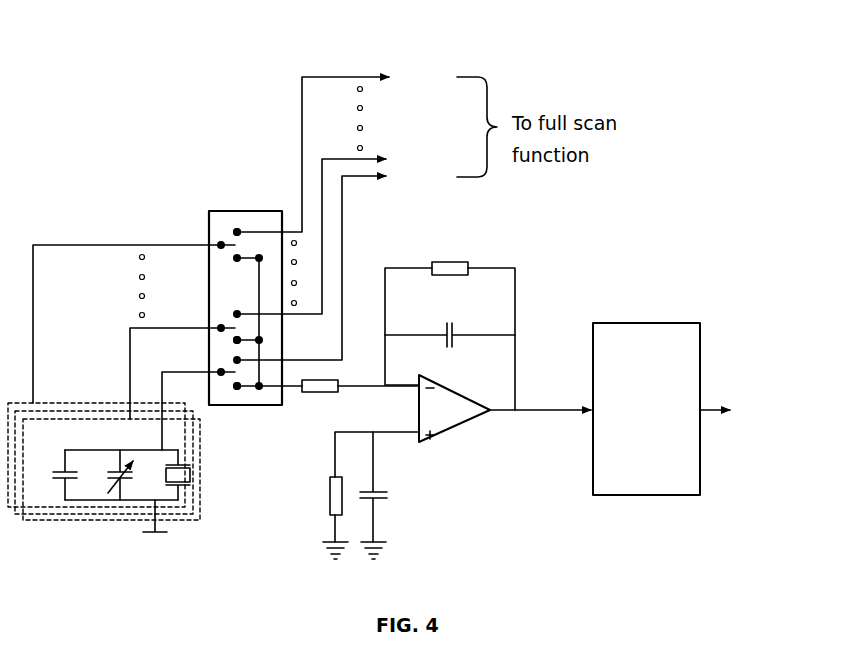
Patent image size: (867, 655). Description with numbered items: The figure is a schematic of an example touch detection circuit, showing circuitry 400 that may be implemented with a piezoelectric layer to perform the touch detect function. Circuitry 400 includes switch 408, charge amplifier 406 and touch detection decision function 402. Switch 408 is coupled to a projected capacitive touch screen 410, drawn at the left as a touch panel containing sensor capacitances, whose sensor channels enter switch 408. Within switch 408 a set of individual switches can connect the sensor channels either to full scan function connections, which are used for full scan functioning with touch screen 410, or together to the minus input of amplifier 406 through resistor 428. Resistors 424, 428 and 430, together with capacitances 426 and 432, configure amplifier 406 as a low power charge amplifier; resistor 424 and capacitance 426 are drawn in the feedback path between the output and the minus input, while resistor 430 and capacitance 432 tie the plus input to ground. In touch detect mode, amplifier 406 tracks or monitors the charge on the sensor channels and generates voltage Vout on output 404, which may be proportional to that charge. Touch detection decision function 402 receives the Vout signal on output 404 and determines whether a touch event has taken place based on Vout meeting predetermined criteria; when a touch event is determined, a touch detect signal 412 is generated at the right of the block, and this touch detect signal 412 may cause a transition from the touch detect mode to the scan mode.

The circuitry 400 is at (132, 152).
The touch detection decision function 402 is at (648, 495).
The output 404 is at (534, 412).
The charge amplifier 406 is at (442, 437).
The switch 408 is at (242, 211).
The projected capacitive touch screen 410 is at (92, 522).
The touch detect signal output 412 is at (712, 407).
The resistor 424 is at (457, 262).
The capacitance 426 is at (456, 331).
The resistor 428 is at (320, 393).
The resistor 430 is at (328, 503).
The capacitance 432 is at (378, 500).